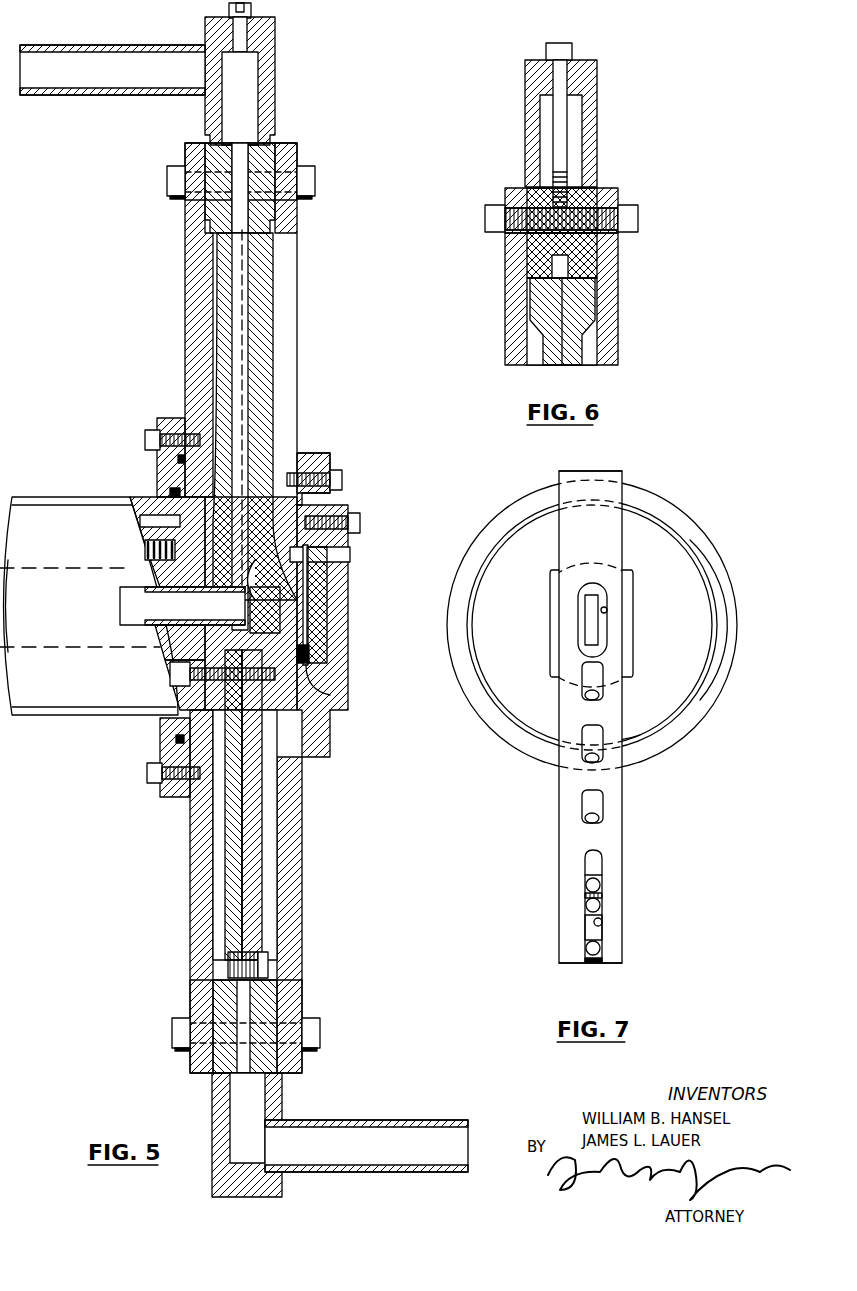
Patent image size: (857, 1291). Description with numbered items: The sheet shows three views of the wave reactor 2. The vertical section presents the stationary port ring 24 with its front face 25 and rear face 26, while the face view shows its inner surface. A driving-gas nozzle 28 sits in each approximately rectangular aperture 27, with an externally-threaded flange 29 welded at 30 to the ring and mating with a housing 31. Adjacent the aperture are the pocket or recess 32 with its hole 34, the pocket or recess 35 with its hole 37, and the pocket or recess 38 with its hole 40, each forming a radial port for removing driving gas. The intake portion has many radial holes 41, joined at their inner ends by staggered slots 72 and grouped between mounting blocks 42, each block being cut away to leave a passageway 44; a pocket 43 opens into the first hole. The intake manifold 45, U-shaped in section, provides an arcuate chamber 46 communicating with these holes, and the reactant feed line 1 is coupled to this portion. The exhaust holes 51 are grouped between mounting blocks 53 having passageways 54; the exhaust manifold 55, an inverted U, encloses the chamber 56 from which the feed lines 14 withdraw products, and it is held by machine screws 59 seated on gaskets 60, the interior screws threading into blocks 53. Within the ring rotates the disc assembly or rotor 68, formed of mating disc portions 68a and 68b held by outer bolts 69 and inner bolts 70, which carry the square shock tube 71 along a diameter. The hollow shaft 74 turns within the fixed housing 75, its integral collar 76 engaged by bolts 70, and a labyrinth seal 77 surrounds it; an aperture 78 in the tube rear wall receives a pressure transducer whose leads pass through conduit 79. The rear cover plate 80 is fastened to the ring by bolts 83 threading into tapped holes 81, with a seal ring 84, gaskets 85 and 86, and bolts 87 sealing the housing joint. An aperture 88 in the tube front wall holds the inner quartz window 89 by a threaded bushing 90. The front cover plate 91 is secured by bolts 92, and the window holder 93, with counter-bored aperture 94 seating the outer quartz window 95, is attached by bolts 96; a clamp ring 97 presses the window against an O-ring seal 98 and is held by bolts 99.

In FIG. 5, the reactant material feed line 1 is at (405, 1122).
In FIG. 5, the wave reactor 2 is at (300, 328).
In FIG. 5, the feed lines 14 is at (80, 45).
In FIG. 5, the port ring 24 is at (296, 156).
In FIG. 6, the port ring 24 is at (520, 243).
In FIG. 7, the port ring 24 is at (624, 781).
In FIG. 5, the front face 25 is at (275, 205).
In FIG. 5, the rear face 26 is at (205, 205).
In FIG. 7, the apertures 27 is at (607, 615).
In FIG. 7, the nozzle 28 is at (582, 630).
In FIG. 7, the externally-threaded flange 29 is at (676, 553).
In FIG. 7, the weld 30 is at (555, 597).
In FIG. 7, the housing 31 is at (668, 507).
In FIG. 7, the pocket or recess 32 is at (582, 672).
In FIG. 7, the hole 34 is at (594, 699).
In FIG. 7, the pocket or recess 35 is at (586, 740).
In FIG. 7, the hole 37 is at (590, 762).
In FIG. 7, the pocket or recess 38 is at (600, 800).
In FIG. 7, the hole 40 is at (585, 820).
In FIG. 5, the holes 41 is at (243, 993).
In FIG. 7, the holes 41 is at (600, 885).
In FIG. 7, the mounting block 42 is at (603, 932).
In FIG. 7, the pocket 43 is at (592, 865).
In FIG. 7, the passageway 44 is at (602, 924).
In FIG. 5, the intake manifold 45 is at (284, 1101).
In FIG. 5, the arcuate chamber 46 is at (258, 1121).
In FIG. 5, the holes 51 is at (240, 222).
In FIG. 6, the mounting block 53 is at (590, 250).
In FIG. 6, the passageway 54 is at (560, 270).
In FIG. 5, the exhaust manifold 55 is at (276, 36).
In FIG. 6, the exhaust manifold 55 is at (521, 107).
In FIG. 5, the arcuate chamber 56 is at (253, 108).
In FIG. 6, the arcuate chamber 56 is at (575, 148).
In FIG. 6, the machine screws 59 is at (558, 80).
In FIG. 6, the gasket 60 is at (572, 50).
In FIG. 5, the disc assembly or rotor 68 is at (275, 788).
In FIG. 6, the disc assembly or rotor 68 is at (552, 370).
In FIG. 5, the disc portion 68a is at (235, 912).
In FIG. 5, the disc portion 68b is at (255, 845).
In FIG. 5, the bolts 69 is at (268, 965).
In FIG. 5, the bolts 70 is at (222, 682).
In FIG. 5, the tube 71 is at (246, 392).
In FIG. 7, the slots 72 is at (585, 895).
In FIG. 5, the hollow shaft 74 is at (5, 615).
In FIG. 5, the housing 75 is at (60, 716).
In FIG. 5, the collar 76 is at (200, 551).
In FIG. 5, the labyrinth seal 77 is at (145, 547).
In FIG. 5, the aperture 78 is at (240, 609).
In FIG. 5, the conduit 79 is at (160, 612).
In FIG. 5, the rear cover plate 80 is at (185, 298).
In FIG. 6, the rear cover plate 80 is at (606, 322).
In FIG. 6, the tapped holes 81 is at (560, 222).
In FIG. 5, the bolts 83 is at (167, 181).
In FIG. 6, the bolts 83 is at (630, 220).
In FIG. 5, the seal ring 84 is at (176, 797).
In FIG. 5, the gasket 85 is at (170, 493).
In FIG. 5, the gasket 86 is at (178, 465).
In FIG. 5, the bolts 87 is at (148, 430).
In FIG. 5, the aperture 88 is at (252, 580).
In FIG. 5, the inner quartz window 89 is at (275, 630).
In FIG. 5, the threaded bushing 90 is at (300, 578).
In FIG. 5, the front cover plate 91 is at (302, 822).
In FIG. 6, the front cover plate 91 is at (515, 333).
In FIG. 5, the bolts 92 is at (315, 181).
In FIG. 6, the bolts 92 is at (493, 220).
In FIG. 5, the window holder 93 is at (305, 455).
In FIG. 5, the counter-bored central aperture 94 is at (310, 655).
In FIG. 5, the outer quartz window 95 is at (318, 600).
In FIG. 5, the bolts 96 is at (342, 472).
In FIG. 5, the clamp ring 97 is at (348, 660).
In FIG. 5, the O-ring seal 98 is at (330, 695).
In FIG. 5, the bolts 99 is at (360, 519).